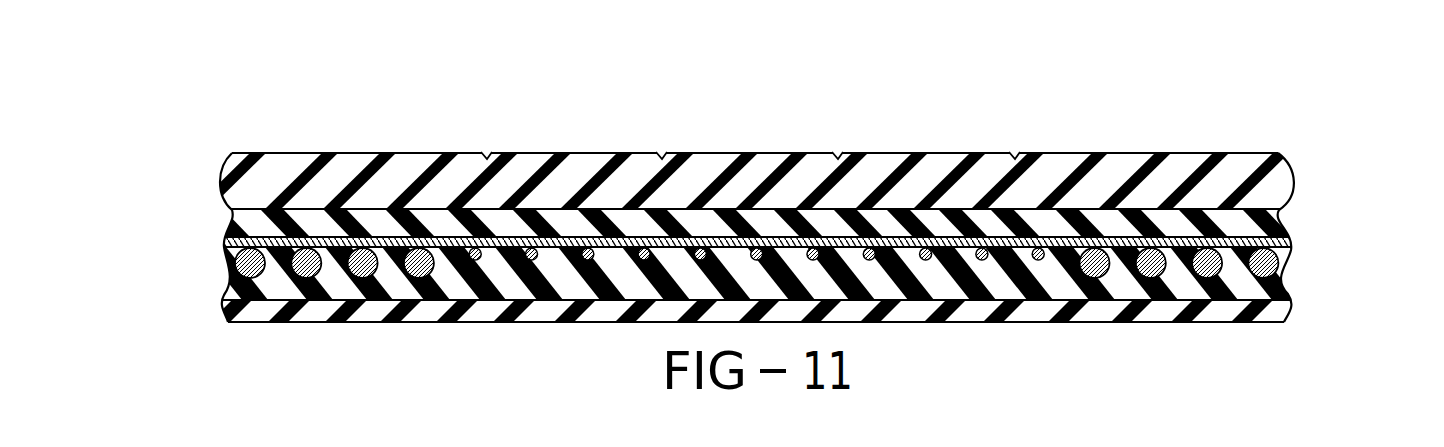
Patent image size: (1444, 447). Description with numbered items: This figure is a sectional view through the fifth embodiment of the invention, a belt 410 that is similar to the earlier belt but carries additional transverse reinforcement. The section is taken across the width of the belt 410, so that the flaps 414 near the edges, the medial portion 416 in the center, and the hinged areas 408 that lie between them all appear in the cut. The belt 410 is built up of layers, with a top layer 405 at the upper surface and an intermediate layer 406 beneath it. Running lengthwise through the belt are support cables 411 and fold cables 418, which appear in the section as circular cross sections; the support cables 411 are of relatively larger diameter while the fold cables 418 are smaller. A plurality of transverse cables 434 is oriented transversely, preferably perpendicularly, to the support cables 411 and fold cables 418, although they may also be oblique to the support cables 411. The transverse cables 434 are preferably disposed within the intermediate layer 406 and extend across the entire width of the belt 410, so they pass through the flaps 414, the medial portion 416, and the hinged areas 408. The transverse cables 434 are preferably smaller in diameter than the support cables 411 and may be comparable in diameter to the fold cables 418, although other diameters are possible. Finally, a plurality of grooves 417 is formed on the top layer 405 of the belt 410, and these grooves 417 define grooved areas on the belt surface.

The belt 410 is at (258, 104).
The flaps 414 is at (353, 138).
The medial portion 416 is at (1197, 137).
The grooves 417 is at (488, 157).
The hinged areas 408 is at (753, 120).
The top layer 405 is at (1300, 176).
The transverse cables 434 is at (1285, 242).
The support cables 411 is at (1275, 264).
The fold cables 418 is at (478, 260).
The intermediate layer 406 is at (1292, 292).